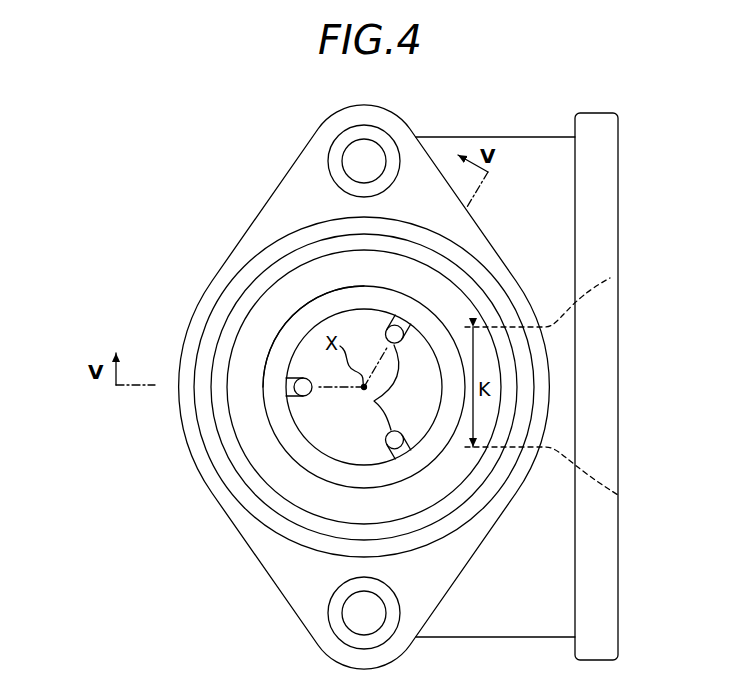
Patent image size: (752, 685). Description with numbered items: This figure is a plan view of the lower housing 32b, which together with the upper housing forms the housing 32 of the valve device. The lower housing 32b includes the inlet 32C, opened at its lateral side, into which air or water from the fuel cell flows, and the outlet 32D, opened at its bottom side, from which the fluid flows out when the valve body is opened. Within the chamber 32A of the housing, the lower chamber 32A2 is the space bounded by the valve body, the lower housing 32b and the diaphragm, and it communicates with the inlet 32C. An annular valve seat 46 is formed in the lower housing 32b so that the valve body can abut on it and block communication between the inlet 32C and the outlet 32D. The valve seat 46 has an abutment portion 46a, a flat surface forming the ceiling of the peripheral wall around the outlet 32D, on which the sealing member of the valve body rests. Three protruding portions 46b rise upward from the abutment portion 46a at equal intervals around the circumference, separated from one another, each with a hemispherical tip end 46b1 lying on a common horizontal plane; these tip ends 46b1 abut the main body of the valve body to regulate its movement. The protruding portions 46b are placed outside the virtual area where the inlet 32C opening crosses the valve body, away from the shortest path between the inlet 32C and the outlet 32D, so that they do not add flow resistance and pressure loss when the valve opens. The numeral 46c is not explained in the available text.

The housing 32 is at (331, 387).
The lower housing 32b is at (203, 308).
The chamber 32A is at (344, 398).
The lower chamber 32A2 is at (265, 436).
The inlet 32C is at (595, 479).
The outlet 32D is at (372, 447).
The valve seat 46 is at (316, 356).
The abutment portion 46a is at (300, 320).
The protruding portion 46b is at (364, 387).
The tip end 46b1 is at (358, 387).
The groove of bearing 46c is at (296, 378).